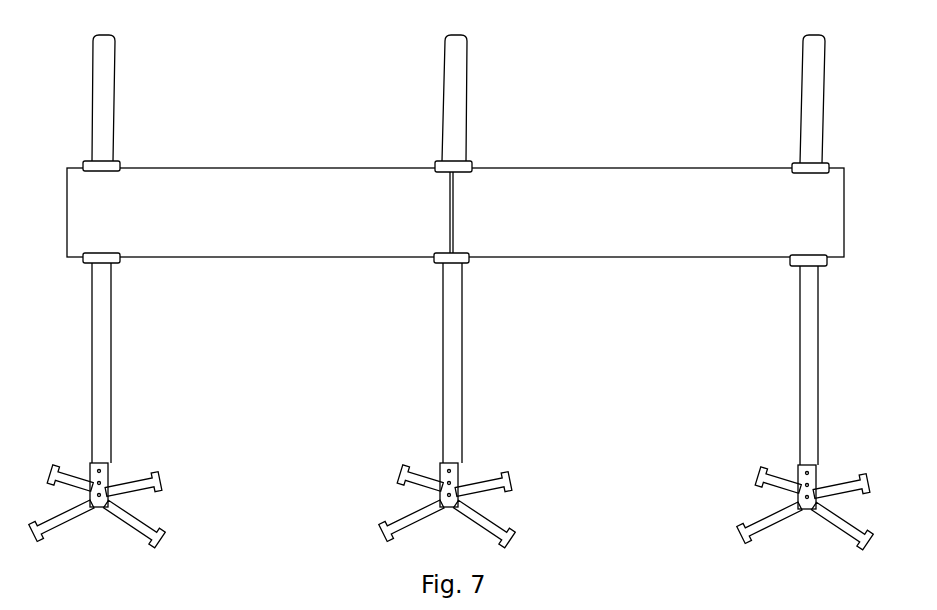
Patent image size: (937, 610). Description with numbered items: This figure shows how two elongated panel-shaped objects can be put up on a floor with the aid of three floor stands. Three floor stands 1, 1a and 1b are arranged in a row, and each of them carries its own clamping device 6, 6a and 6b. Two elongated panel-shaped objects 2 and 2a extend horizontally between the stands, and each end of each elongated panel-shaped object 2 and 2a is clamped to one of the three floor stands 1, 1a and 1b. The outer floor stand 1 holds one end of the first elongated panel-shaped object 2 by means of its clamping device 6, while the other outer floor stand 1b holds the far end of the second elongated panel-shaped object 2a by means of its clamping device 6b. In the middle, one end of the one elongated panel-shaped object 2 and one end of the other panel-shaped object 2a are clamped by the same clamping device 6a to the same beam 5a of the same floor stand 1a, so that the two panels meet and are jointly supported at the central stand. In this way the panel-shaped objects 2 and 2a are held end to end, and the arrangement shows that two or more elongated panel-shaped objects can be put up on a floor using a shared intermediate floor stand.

The floor stand 1 is at (135, 65).
The floor stand 1a is at (451, 285).
The floor stand 1b is at (777, 62).
The elongated panel-shaped object 2 is at (275, 223).
The elongated panel-shaped object 2a is at (662, 223).
The beam 5a is at (455, 98).
The clamping device 6 is at (120, 155).
The clamping device 6a is at (475, 158).
The clamping device 6b is at (788, 157).